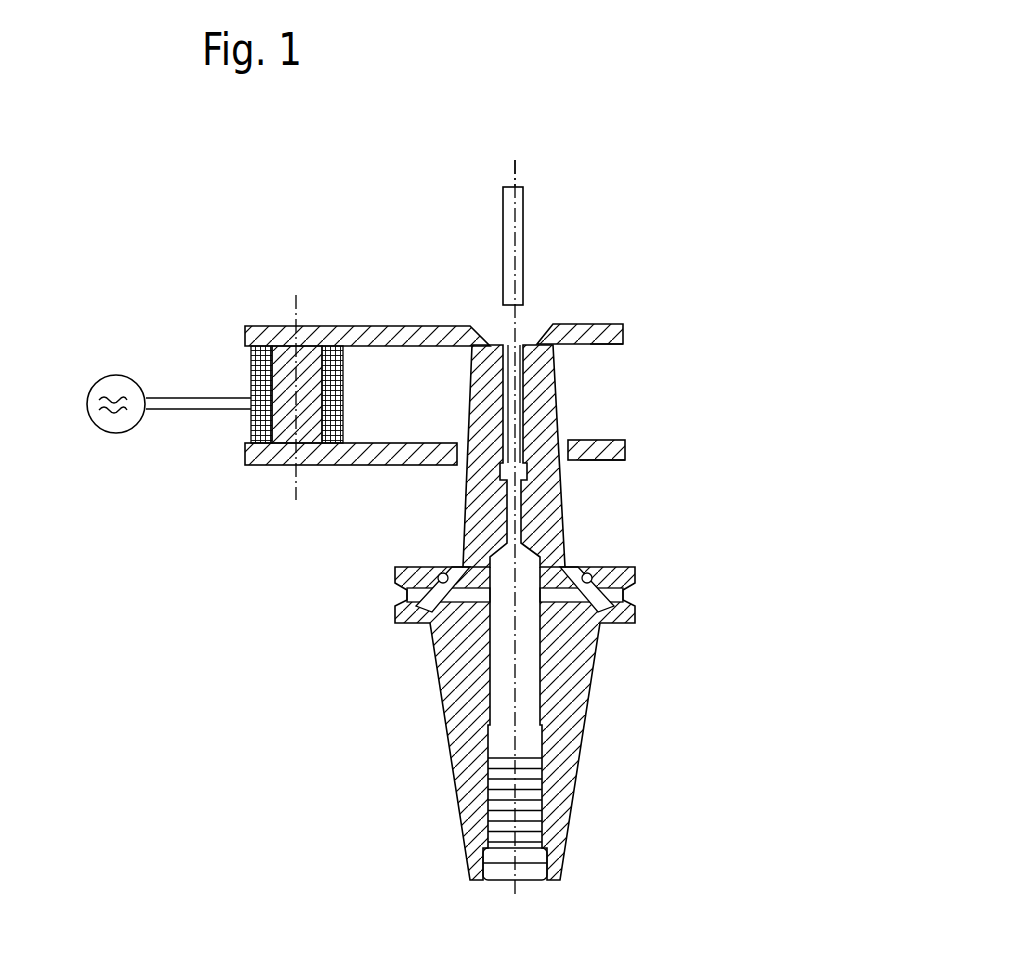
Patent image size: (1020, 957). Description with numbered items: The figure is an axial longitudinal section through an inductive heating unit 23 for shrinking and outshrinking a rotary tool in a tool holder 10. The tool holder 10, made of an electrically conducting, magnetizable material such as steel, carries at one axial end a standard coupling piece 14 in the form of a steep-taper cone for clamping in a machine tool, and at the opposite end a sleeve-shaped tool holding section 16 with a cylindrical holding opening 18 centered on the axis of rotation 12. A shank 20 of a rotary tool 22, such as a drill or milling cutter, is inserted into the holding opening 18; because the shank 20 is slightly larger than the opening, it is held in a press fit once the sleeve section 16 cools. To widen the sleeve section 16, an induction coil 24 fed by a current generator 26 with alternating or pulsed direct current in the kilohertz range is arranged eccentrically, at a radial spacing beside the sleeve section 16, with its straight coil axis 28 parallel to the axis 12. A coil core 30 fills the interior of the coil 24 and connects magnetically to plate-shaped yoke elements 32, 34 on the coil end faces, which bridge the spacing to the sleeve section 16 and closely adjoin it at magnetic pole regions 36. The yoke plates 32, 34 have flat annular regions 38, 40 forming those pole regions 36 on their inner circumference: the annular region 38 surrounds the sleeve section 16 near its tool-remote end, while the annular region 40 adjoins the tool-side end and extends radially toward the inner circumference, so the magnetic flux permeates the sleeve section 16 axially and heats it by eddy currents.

The tool holder 10 is at (694, 551).
The axis of rotation 12 is at (517, 677).
The standard coupling piece 14 is at (463, 743).
The sleeve-shaped tool holding section 16 is at (483, 467).
The holding opening 18 is at (520, 393).
The shank 20 is at (502, 245).
The rotary tool 22 is at (534, 184).
The inductive heating unit 23 is at (241, 318).
The induction coil 24 is at (250, 420).
The current generator 26 is at (105, 377).
The coil axis 28 is at (263, 522).
The coil core 30 is at (257, 373).
The yoke plate 32 is at (364, 454).
The yoke plate 34 is at (372, 326).
The magnetic pole regions 36 is at (543, 324).
The annular region 38 is at (597, 462).
The annular region 40 is at (600, 346).